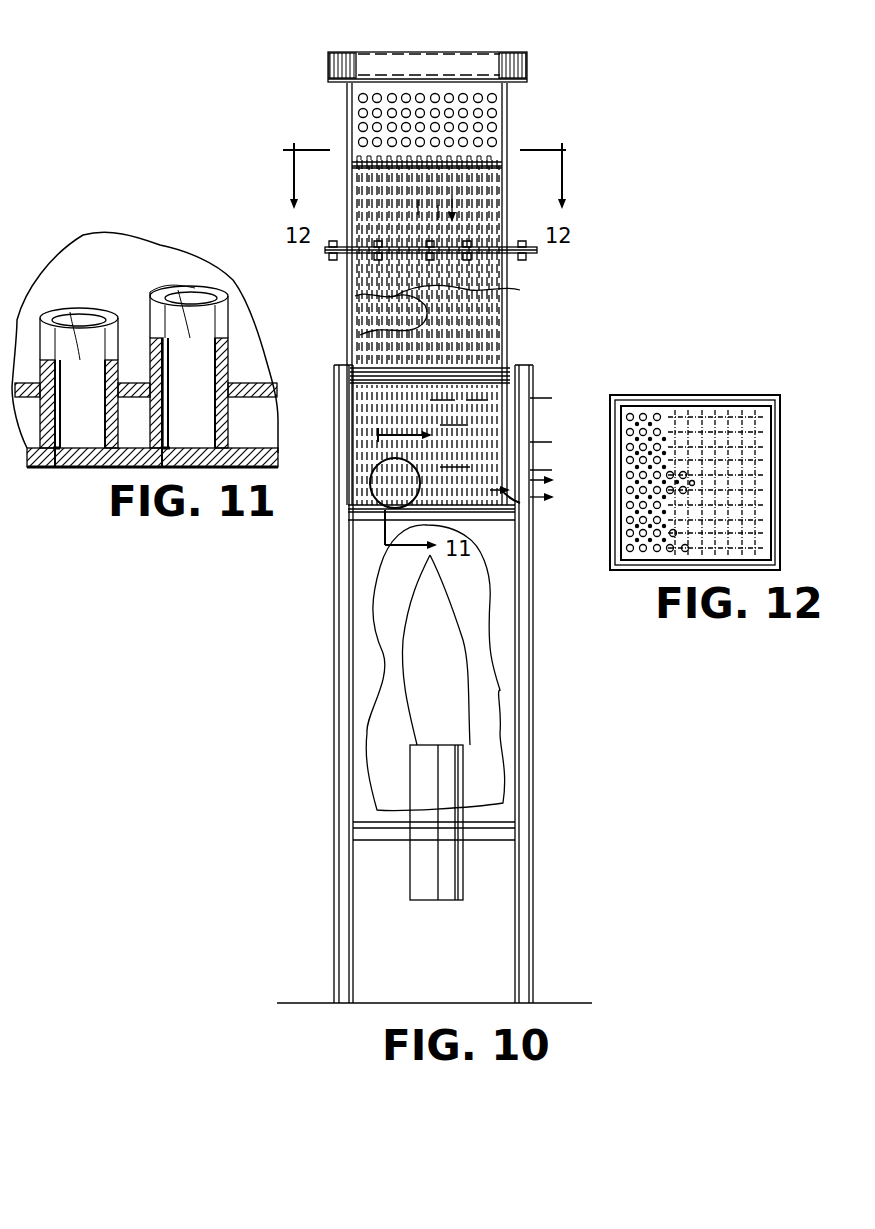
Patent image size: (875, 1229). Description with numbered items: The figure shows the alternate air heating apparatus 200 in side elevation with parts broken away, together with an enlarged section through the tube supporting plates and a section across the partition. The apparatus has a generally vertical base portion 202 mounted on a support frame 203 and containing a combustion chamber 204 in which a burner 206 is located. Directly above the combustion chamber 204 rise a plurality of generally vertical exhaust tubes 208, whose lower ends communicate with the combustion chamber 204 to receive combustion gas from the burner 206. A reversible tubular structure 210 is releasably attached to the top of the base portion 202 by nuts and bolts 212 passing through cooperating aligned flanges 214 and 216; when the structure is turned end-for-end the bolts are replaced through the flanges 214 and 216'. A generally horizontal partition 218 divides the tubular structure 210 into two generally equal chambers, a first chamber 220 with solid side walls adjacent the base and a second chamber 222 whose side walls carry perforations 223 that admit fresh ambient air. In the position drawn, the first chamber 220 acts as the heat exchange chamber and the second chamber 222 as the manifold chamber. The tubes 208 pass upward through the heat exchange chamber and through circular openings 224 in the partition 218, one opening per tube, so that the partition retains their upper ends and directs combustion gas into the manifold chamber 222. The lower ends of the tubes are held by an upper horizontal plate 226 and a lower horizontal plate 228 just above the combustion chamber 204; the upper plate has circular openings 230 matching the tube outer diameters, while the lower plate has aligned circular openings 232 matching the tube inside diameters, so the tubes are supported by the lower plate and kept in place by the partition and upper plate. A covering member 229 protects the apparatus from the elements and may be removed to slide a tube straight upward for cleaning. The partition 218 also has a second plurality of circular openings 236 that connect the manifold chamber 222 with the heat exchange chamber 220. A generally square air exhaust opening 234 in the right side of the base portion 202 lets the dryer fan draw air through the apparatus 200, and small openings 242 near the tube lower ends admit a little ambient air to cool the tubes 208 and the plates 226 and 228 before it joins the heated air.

In FIG. 10, the air heating apparatus 200 is at (522, 283).
In FIG. 10, the base portion 202 is at (500, 607).
In FIG. 10, the support frame 203 is at (528, 697).
In FIG. 10, the combustion chamber 204 is at (353, 580).
In FIG. 10, the burner 206 is at (428, 788).
In FIG. 10, the exhaust tubes 208 is at (360, 310).
In FIG. 11, the exhaust tubes 208 is at (158, 315).
In FIG. 10, the tubular structure 210 is at (470, 118).
In FIG. 10, the nuts and bolts 212 is at (333, 241).
In FIG. 10, the flange 214 is at (537, 252).
In FIG. 10, the flange 216 is at (473, 240).
In FIG. 10, the flange 216' is at (459, 65).
In FIG. 10, the partition 218 is at (490, 166).
In FIG. 12, the partition 218 is at (722, 425).
In FIG. 10, the first chamber 220 is at (365, 180).
In FIG. 10, the second chamber 222 is at (358, 106).
In FIG. 10, the perforations 223 is at (392, 126).
In FIG. 12, the circular openings 224 is at (643, 413).
In FIG. 10, the upper horizontal plate 226 is at (352, 505).
In FIG. 11, the upper horizontal plate 226 is at (268, 384).
In FIG. 10, the lower horizontal plate 228 is at (370, 518).
In FIG. 11, the lower horizontal plate 228 is at (245, 462).
In FIG. 10, the covering member 229 is at (470, 60).
In FIG. 11, the circular openings 230 is at (62, 325).
In FIG. 11, the circular openings 232 is at (168, 458).
In FIG. 10, the air exhaust opening 234 is at (532, 385).
In FIG. 12, the circular openings 236 is at (667, 438).
In FIG. 10, the small openings 242 is at (532, 505).